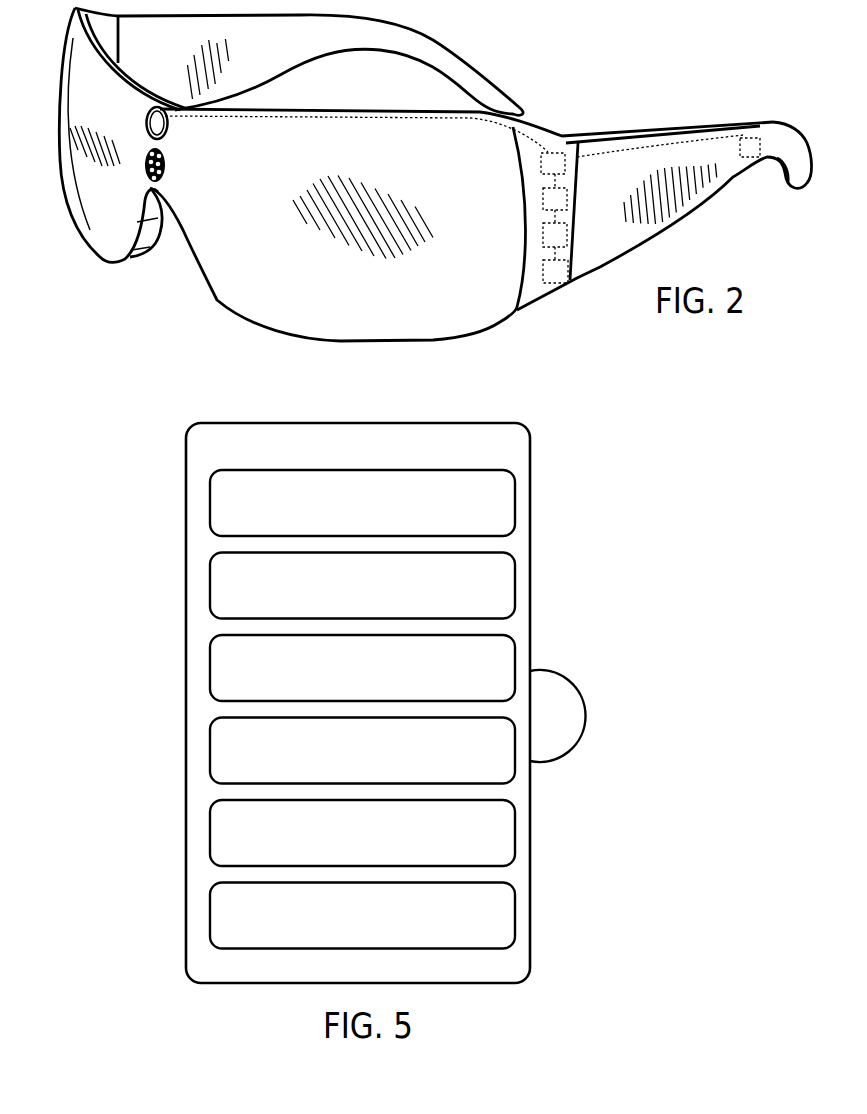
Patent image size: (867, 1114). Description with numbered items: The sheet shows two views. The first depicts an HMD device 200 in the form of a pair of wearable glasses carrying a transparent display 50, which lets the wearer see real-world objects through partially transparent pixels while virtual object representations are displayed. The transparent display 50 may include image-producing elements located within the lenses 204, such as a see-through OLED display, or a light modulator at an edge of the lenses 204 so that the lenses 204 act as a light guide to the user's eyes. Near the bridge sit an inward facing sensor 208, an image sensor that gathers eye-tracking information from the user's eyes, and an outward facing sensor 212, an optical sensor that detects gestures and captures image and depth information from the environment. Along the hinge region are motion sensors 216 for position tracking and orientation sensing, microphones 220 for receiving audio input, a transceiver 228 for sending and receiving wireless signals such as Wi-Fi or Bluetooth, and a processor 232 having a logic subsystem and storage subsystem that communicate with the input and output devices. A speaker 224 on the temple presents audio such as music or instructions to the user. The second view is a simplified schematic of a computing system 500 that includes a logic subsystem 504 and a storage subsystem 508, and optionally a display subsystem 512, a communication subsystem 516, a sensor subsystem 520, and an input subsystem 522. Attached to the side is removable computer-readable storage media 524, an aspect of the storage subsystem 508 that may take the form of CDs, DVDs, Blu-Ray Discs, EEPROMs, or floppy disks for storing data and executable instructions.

In FIG. 2, the HMD device 200 is at (91, 297).
In FIG. 2, the transparent display 50 is at (246, 276).
In FIG. 2, the lenses 204 is at (100, 237).
In FIG. 2, the inward facing sensor 208 is at (167, 165).
In FIG. 2, the outward facing sensor 212 is at (171, 122).
In FIG. 2, the motion sensors 216 is at (556, 150).
In FIG. 2, the microphones 220 is at (567, 196).
In FIG. 2, the transceiver 228 is at (567, 235).
In FIG. 2, the processor 232 is at (556, 283).
In FIG. 2, the speakers 224 is at (750, 138).
In FIG. 5, the computing system 500 is at (462, 452).
In FIG. 5, the logic subsystem 504 is at (458, 497).
In FIG. 5, the storage subsystem 508 is at (473, 579).
In FIG. 5, the display subsystem 512 is at (467, 662).
In FIG. 5, the communication subsystem 516 is at (505, 744).
In FIG. 5, the sensor subsystem 520 is at (467, 827).
In FIG. 5, the input subsystem 522 is at (457, 909).
In FIG. 5, the removable computer-readable storage media 524 is at (571, 725).